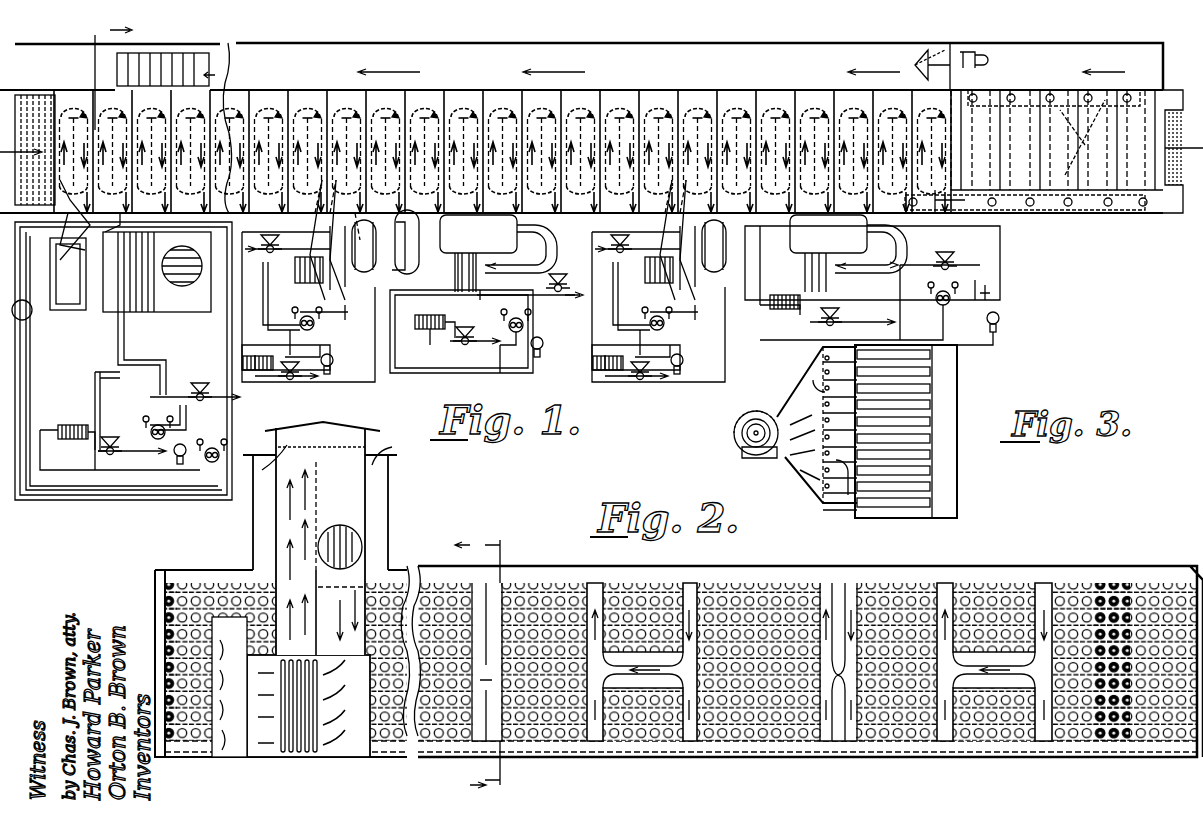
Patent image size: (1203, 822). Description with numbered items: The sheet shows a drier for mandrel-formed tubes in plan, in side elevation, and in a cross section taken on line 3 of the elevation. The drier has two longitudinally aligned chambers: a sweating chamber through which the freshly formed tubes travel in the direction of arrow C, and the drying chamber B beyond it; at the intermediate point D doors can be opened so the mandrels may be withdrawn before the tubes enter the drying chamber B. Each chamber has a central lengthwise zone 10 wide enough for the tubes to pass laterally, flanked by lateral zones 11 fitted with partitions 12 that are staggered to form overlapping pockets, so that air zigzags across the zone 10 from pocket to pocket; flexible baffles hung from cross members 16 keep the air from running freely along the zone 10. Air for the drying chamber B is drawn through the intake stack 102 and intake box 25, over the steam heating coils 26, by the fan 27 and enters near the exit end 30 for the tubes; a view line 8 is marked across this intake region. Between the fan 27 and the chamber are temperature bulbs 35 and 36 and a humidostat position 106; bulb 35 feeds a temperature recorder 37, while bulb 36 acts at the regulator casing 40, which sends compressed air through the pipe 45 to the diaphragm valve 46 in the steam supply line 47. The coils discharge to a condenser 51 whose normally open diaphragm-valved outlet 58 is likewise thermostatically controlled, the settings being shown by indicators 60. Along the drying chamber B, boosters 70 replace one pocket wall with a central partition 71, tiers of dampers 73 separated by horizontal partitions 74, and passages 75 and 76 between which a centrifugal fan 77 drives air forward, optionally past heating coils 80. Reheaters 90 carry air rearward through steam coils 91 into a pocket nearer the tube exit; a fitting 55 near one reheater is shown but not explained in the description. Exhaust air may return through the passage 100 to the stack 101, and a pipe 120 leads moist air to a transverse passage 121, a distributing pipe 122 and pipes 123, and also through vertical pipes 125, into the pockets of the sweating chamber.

In FIG. 2, the section line 3 is at (481, 666).
In FIG. 1, the view line 8 is at (127, 185).
In FIG. 1, the central lengthwise zone 10 is at (712, 118).
In FIG. 1, the lateral zones 11 is at (665, 100).
In FIG. 1, the partitions 12 is at (515, 100).
In FIG. 1, the cross members 16 is at (275, 130).
In FIG. 1, the intake box 25 is at (190, 312).
In FIG. 2, the intake box 25 is at (360, 757).
In FIG. 1, the steam heating coils 26 is at (115, 325).
In FIG. 2, the steam heating coils 26 is at (300, 752).
In FIG. 1, the fan 27 is at (122, 361).
In FIG. 1, the exit end 30 is at (35, 145).
In FIG. 1, the temperature responsive bulb element 35 is at (83, 226).
In FIG. 1, the temperature responsive bulb element 36 is at (124, 217).
In FIG. 1, the temperature recorder 37 is at (184, 462).
In FIG. 1, the temperature regulator 40 is at (150, 438).
In FIG. 1, the pipe 45 is at (205, 345).
In FIG. 1, the diaphragm valve 46 is at (190, 385).
In FIG. 1, the steam supply line 47 is at (150, 372).
In FIG. 1, the condenser 51 is at (420, 374).
In FIG. 1, the branch pipe 55 is at (765, 255).
In FIG. 1, the diaphragm valved outlet 58 is at (108, 436).
In FIG. 1, the indicators 60 is at (164, 397).
In FIG. 1, the boosters 70 is at (305, 228).
In FIG. 2, the boosters 70 is at (478, 740).
In FIG. 1, the central partition 71 is at (503, 233).
In FIG. 3, the dampers 73 is at (823, 352).
In FIG. 3, the horizontal partitions 74 is at (815, 375).
In FIG. 1, the passage 75 is at (295, 268).
In FIG. 3, the passage 75 is at (795, 455).
In FIG. 1, the passage 76 is at (347, 312).
In FIG. 3, the centrifugal fan 77 is at (735, 433).
In FIG. 1, the coils 80 is at (290, 285).
In FIG. 1, the reheater devices 90 is at (560, 250).
In FIG. 2, the reheater devices 90 is at (690, 745).
In FIG. 1, the steam coils 91 is at (478, 265).
In FIG. 1, the passage 100 is at (865, 55).
In FIG. 2, the stack 101 is at (283, 533).
In FIG. 2, the intake stack 102 is at (360, 513).
In FIG. 1, the humidity responsive element 106 is at (85, 120).
In FIG. 1, the pipe 120 is at (925, 213).
In FIG. 1, the transverse passage 121 is at (1130, 95).
In FIG. 1, the distributing pipe 122 is at (1050, 98).
In FIG. 1, the pipes 123 is at (1088, 98).
In FIG. 1, the vertical pipes 125 is at (1005, 210).
In FIG. 1, the drying chamber B is at (613, 68).
In FIG. 1, the arrow C is at (1183, 151).
In FIG. 1, the intermediate point D is at (945, 213).
In FIG. 2, the intermediate point D is at (1110, 580).